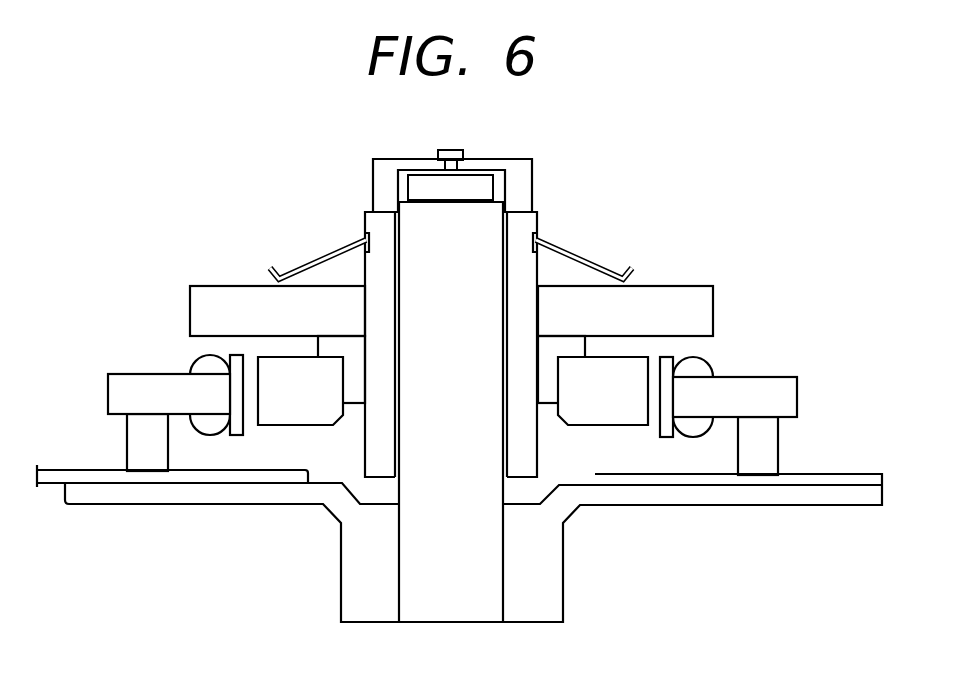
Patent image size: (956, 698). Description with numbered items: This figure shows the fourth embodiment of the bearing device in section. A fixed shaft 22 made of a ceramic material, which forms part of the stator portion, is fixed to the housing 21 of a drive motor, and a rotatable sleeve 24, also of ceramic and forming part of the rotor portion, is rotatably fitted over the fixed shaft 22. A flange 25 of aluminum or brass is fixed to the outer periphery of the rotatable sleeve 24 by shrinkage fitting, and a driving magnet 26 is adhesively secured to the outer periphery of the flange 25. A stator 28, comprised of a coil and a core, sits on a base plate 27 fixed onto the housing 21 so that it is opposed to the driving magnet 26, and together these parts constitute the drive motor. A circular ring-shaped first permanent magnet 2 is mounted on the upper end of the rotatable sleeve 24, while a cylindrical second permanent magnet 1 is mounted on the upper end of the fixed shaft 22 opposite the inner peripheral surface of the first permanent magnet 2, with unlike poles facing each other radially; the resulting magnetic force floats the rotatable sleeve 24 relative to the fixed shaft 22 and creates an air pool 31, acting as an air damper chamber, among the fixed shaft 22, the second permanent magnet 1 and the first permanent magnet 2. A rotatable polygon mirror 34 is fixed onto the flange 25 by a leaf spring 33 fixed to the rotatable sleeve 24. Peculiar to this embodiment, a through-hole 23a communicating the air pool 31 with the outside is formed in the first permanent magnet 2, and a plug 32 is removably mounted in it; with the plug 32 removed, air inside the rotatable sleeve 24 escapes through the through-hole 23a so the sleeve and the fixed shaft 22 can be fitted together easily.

The second permanent magnet 1 is at (410, 178).
The first permanent magnet 2 is at (534, 183).
The housing 21 is at (350, 587).
The fixed shaft 22 is at (348, 239).
The through-hole 23a is at (458, 166).
The rotatable sleeve 24 is at (365, 214).
The flange 25 is at (335, 343).
The driving magnet 26 is at (630, 385).
The base plate 27 is at (158, 476).
The stator 28 is at (787, 400).
The air pool 31 is at (505, 172).
The plug 32 is at (447, 152).
The leaf spring 33 is at (572, 253).
The rotatable polygon mirror 34 is at (703, 308).